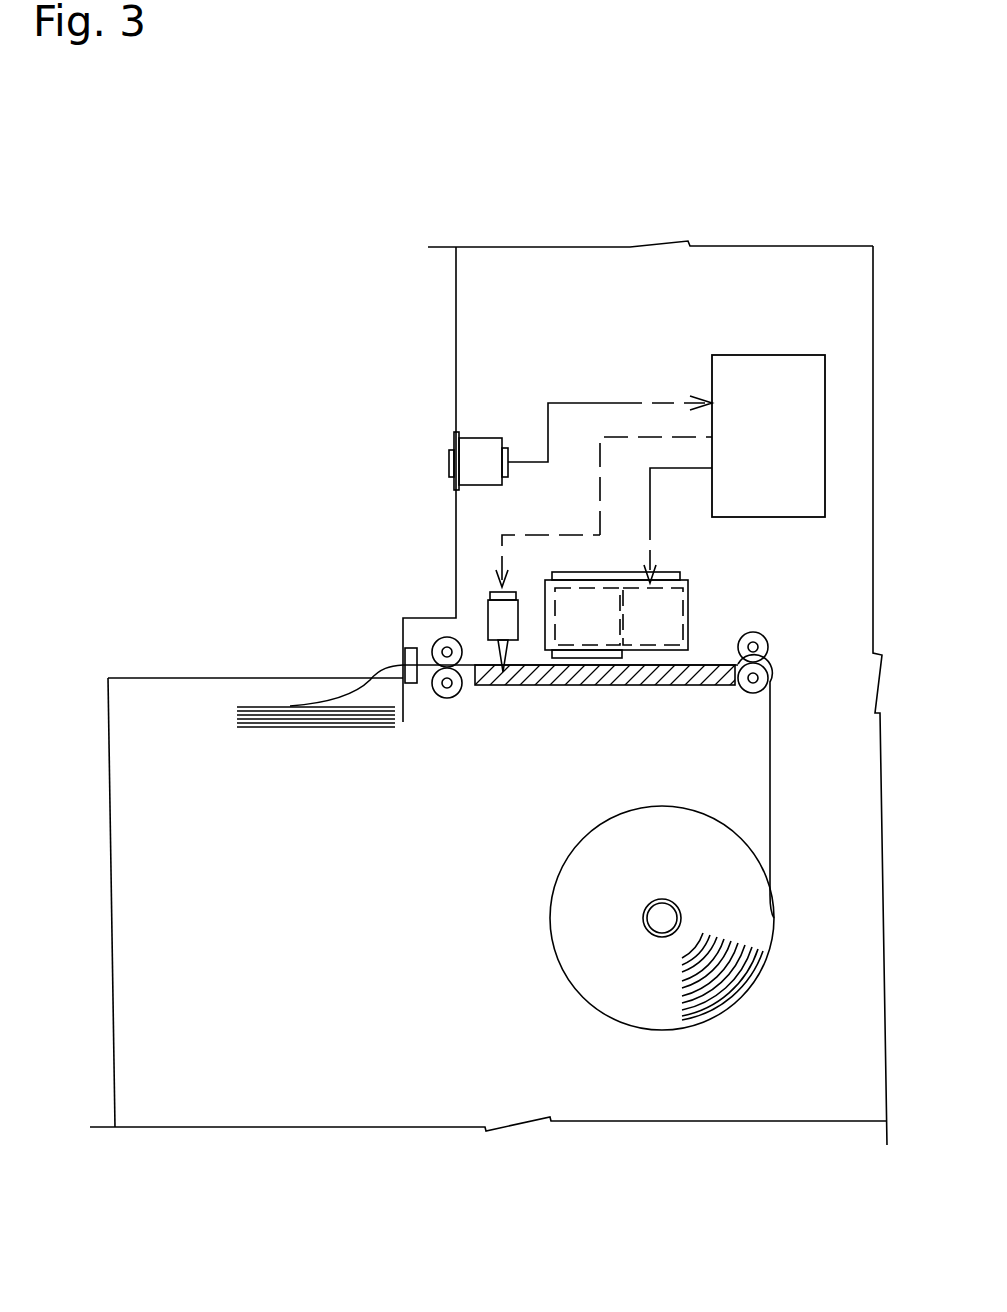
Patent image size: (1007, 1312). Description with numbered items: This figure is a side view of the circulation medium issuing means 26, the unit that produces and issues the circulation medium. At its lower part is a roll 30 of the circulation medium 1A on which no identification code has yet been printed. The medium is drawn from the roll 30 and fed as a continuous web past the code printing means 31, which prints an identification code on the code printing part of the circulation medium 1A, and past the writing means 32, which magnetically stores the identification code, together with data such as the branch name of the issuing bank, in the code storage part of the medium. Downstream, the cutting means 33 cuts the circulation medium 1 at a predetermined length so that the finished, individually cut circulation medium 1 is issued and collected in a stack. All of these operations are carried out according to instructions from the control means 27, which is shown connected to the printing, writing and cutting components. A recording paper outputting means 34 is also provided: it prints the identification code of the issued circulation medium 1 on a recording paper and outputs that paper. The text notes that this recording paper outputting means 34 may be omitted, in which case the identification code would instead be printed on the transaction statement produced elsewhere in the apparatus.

The circulation medium 1 is at (312, 700).
The circulation medium 1A is at (771, 842).
The circulation medium issuing means 26 is at (430, 421).
The control means 27 is at (732, 370).
The roll 30 is at (590, 987).
The code printing means 31 is at (582, 640).
The writing means 32 is at (657, 640).
The cutting means 33 is at (496, 625).
The recording paper outputting means 34 is at (480, 448).